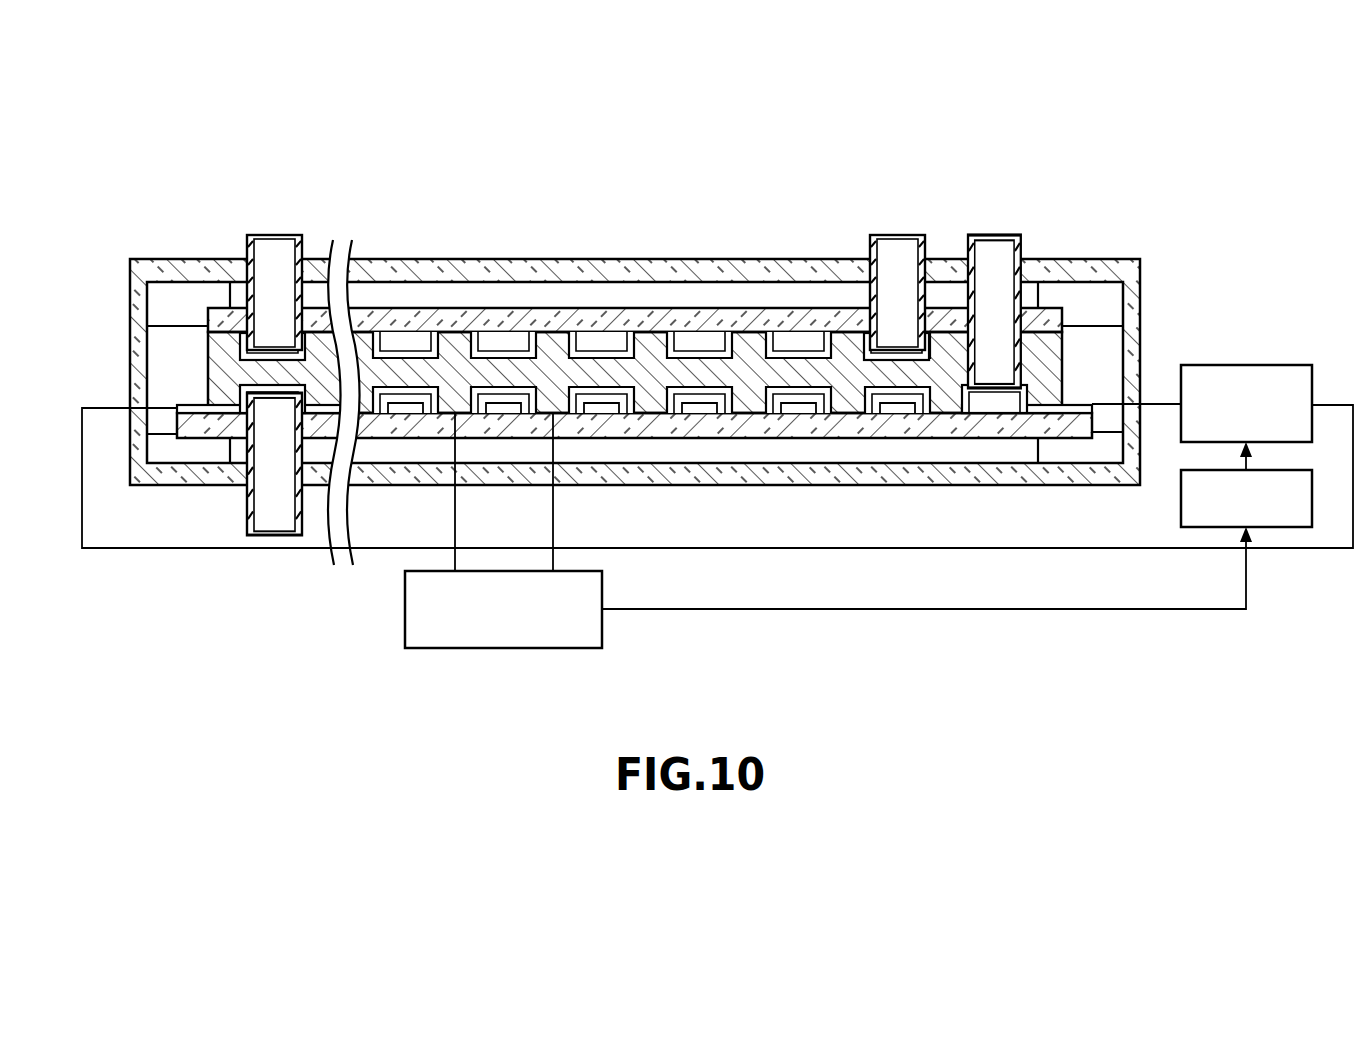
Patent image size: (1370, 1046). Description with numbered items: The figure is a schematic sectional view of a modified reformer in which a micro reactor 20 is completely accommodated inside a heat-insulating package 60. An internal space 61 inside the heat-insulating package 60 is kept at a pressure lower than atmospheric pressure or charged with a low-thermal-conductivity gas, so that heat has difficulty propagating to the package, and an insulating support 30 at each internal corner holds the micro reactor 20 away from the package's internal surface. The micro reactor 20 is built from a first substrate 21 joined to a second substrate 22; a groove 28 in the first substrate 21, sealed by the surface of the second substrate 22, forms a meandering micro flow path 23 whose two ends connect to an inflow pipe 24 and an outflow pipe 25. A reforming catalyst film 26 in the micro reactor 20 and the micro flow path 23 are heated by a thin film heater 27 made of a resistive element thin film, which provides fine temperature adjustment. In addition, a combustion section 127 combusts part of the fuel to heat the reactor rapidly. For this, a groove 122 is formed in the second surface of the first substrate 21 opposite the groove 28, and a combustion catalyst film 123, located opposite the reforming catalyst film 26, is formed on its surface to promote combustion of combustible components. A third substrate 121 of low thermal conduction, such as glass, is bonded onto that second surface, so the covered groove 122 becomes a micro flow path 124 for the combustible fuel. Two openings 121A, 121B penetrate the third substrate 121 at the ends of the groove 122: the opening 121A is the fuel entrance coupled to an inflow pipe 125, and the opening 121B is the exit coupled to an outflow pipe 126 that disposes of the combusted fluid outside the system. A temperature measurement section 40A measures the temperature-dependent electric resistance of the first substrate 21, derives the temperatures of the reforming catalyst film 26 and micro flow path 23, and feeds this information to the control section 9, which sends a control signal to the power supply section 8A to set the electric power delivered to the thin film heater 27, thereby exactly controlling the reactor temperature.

The micro reactor 20 is at (620, 393).
The first substrate 21 is at (945, 400).
The second substrate 22 is at (855, 420).
The micro flow path 23 is at (408, 400).
The inflow pipe 24 is at (247, 523).
The outflow pipe 25 is at (1023, 246).
The reforming catalyst film 26 is at (895, 400).
The thin film heater 27 is at (793, 405).
The groove 28 is at (700, 376).
The insulating support 30 is at (160, 300).
The heat-insulating package 60 is at (690, 477).
The internal space 61 is at (418, 298).
The third substrate 121 is at (562, 328).
The opening 121A is at (237, 315).
The opening 121B is at (938, 325).
The groove 122 is at (630, 377).
The combustion catalyst film 123 is at (505, 347).
The micro flow path 124 is at (700, 342).
The inflow pipe 125 is at (300, 240).
The outflow pipe 126 is at (868, 250).
The combustion section 127 is at (748, 290).
The power supply section 8A is at (1258, 365).
The control section 9 is at (1258, 470).
The temperature measurement section 40A is at (582, 648).